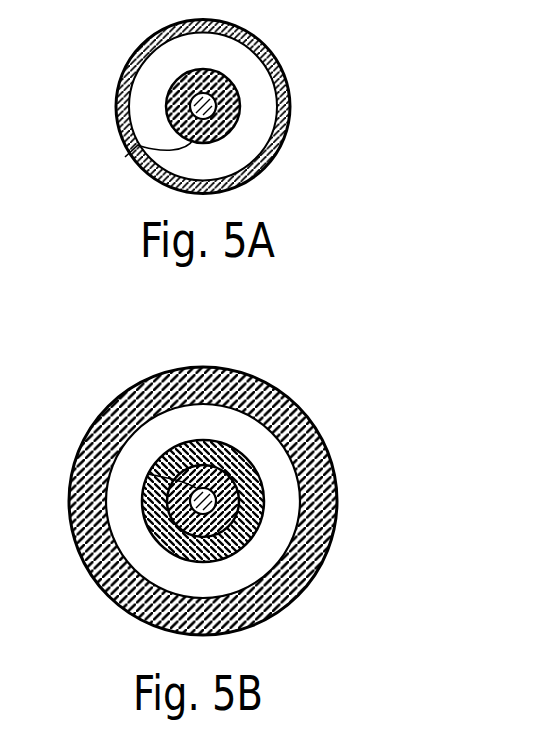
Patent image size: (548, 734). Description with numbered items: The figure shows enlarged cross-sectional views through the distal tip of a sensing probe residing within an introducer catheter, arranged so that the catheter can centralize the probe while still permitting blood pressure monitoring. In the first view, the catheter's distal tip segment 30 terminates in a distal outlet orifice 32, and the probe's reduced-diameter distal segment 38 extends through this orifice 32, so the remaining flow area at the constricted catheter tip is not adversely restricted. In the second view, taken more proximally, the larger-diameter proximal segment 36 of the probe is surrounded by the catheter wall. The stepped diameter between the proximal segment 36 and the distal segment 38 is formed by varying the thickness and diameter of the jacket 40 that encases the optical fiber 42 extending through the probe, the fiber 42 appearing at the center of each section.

In FIG. 5B, the distal tip segment 30 is at (316, 424).
In FIG. 5A, the distal outlet orifice 32 is at (246, 34).
In FIG. 5B, the proximal segment 36 is at (241, 547).
In FIG. 5A, the distal segment 38 is at (138, 145).
In FIG. 5B, the distal segment 38 is at (241, 488).
In FIG. 5A, the jacket 40 is at (197, 73).
In FIG. 5B, the jacket 40 is at (147, 474).
In FIG. 5A, the optical fiber 42 is at (166, 104).
In FIG. 5B, the optical fiber 42 is at (167, 505).